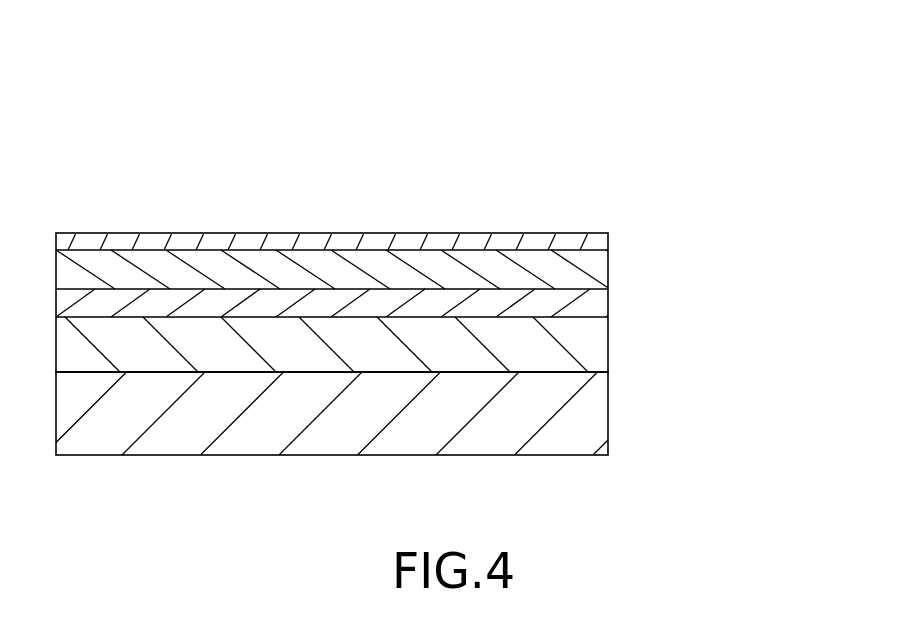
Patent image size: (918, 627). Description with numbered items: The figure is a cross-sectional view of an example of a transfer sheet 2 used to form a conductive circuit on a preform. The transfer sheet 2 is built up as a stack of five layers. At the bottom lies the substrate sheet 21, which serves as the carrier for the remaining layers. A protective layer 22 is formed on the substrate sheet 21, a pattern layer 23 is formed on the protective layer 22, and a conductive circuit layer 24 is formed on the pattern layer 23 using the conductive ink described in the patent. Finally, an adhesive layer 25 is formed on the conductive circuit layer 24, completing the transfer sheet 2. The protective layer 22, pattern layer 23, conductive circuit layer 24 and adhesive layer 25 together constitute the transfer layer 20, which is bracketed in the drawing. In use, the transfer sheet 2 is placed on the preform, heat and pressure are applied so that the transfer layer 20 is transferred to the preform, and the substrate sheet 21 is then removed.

The transfer sheet 2 is at (353, 102).
The transfer layer 20 is at (451, 288).
The substrate sheet 21 is at (583, 423).
The protective layer 22 is at (587, 348).
The pattern layer 23 is at (585, 307).
The conductive circuit layer 24 is at (593, 262).
The adhesive layer 25 is at (593, 243).